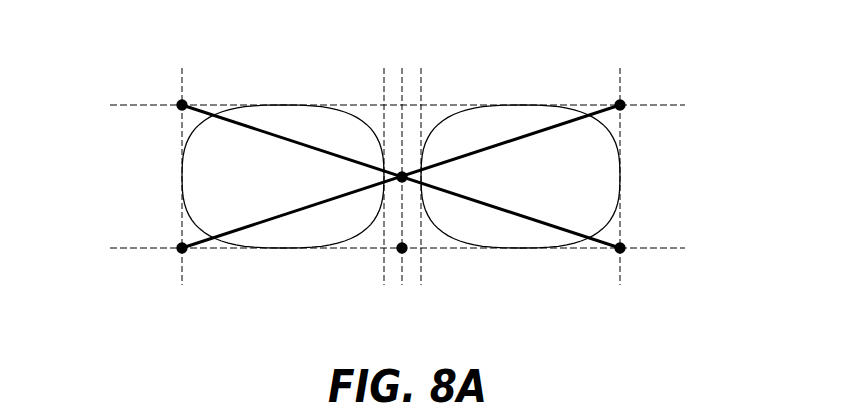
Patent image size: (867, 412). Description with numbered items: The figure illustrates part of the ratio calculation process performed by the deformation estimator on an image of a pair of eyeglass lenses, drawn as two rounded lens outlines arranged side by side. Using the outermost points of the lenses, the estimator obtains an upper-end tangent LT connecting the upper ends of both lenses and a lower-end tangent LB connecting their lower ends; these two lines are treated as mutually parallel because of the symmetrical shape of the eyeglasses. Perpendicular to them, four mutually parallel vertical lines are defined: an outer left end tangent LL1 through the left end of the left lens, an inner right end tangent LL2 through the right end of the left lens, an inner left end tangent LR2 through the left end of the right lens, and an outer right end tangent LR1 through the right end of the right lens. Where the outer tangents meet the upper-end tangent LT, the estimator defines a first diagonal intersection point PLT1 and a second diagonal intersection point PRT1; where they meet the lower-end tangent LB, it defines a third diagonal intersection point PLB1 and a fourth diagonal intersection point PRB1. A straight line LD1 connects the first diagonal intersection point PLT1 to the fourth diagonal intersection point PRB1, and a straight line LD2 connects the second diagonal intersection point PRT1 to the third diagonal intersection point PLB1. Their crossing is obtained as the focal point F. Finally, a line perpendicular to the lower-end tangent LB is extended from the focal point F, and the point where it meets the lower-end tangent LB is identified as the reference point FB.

The first diagonal intersection point PLT1 is at (180, 104).
The third diagonal intersection point PLB1 is at (180, 247).
The second diagonal intersection point PRT1 is at (622, 104).
The fourth diagonal intersection point PRB1 is at (622, 247).
The upper-end tangent LT is at (373, 107).
The lower-end tangent LB is at (373, 251).
The outer left end tangent LL1 is at (180, 199).
The inner right end tangent LL2 is at (375, 199).
The inner left end tangent LR2 is at (443, 199).
The outer right end tangent LR1 is at (620, 199).
The straight line LD1 is at (258, 128).
The straight line LD2 is at (510, 140).
The focal point F is at (430, 167).
The reference point FB is at (410, 250).